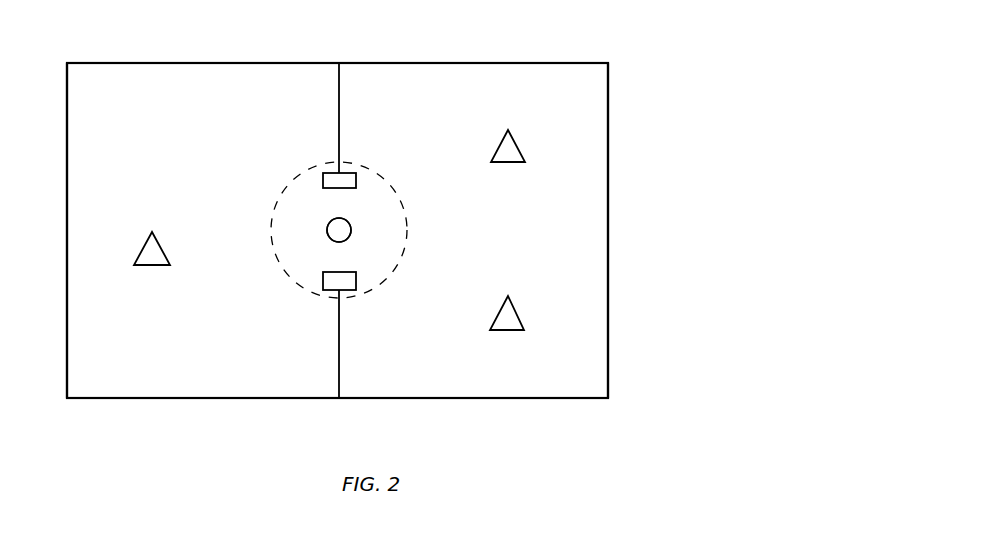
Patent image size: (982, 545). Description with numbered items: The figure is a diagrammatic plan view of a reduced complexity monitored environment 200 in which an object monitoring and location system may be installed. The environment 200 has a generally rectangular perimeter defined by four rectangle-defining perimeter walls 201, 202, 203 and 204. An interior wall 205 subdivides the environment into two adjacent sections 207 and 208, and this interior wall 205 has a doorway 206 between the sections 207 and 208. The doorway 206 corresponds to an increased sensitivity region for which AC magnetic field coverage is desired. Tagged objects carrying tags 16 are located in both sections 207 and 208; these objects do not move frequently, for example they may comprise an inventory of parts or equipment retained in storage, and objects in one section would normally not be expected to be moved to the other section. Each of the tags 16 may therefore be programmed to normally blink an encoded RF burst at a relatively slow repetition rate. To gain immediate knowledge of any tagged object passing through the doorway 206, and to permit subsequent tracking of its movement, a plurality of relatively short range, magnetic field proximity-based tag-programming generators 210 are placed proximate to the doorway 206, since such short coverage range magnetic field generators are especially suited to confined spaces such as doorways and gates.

The monitored environment 200 is at (527, 52).
The perimeter wall 201 is at (402, 62).
The perimeter wall 202 is at (66, 252).
The perimeter wall 203 is at (264, 400).
The perimeter wall 204 is at (610, 314).
The interior wall 205 is at (340, 110).
The doorway 206 is at (348, 259).
The section 207 is at (143, 95).
The section 208 is at (570, 118).
The tag-programming generators 210 is at (322, 180).
The tags 16 is at (163, 252).